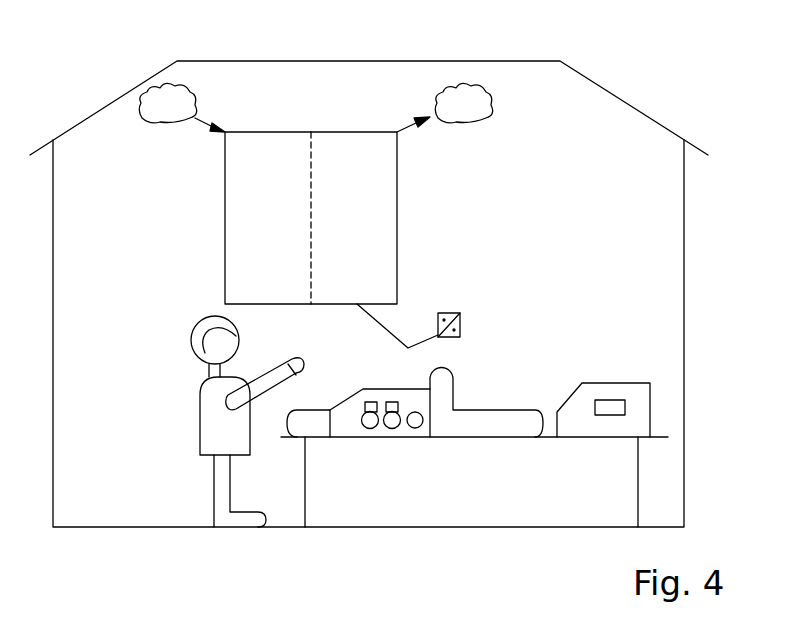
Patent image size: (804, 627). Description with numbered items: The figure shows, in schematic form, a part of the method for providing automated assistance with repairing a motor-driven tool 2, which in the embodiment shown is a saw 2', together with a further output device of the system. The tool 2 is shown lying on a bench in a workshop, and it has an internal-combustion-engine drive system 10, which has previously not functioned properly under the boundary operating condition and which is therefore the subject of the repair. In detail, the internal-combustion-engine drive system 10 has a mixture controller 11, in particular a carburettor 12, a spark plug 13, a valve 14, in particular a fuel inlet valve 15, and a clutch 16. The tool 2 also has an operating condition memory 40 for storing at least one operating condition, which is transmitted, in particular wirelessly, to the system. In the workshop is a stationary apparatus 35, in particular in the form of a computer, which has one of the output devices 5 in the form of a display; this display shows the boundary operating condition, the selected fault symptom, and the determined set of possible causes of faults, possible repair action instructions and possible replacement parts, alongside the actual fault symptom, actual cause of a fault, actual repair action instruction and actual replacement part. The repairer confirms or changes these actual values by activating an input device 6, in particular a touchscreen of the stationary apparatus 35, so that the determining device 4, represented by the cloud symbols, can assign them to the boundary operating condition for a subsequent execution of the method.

The determining device 4 is at (160, 117).
The output device 5 is at (307, 193).
The input device 6 is at (311, 132).
The stationary apparatus 35 is at (353, 193).
The spark plug 13 is at (392, 400).
The internal-combustion-engine drive system 10 is at (356, 440).
The motor-driven tool 2 is at (415, 435).
The saw 2' is at (415, 435).
The valve 14 is at (365, 379).
The fuel inlet valve 15 is at (368, 402).
The mixture controller 11 is at (380, 458).
The carburettor 12 is at (373, 428).
The clutch 16 is at (418, 428).
The operating condition memory 40 is at (612, 415).